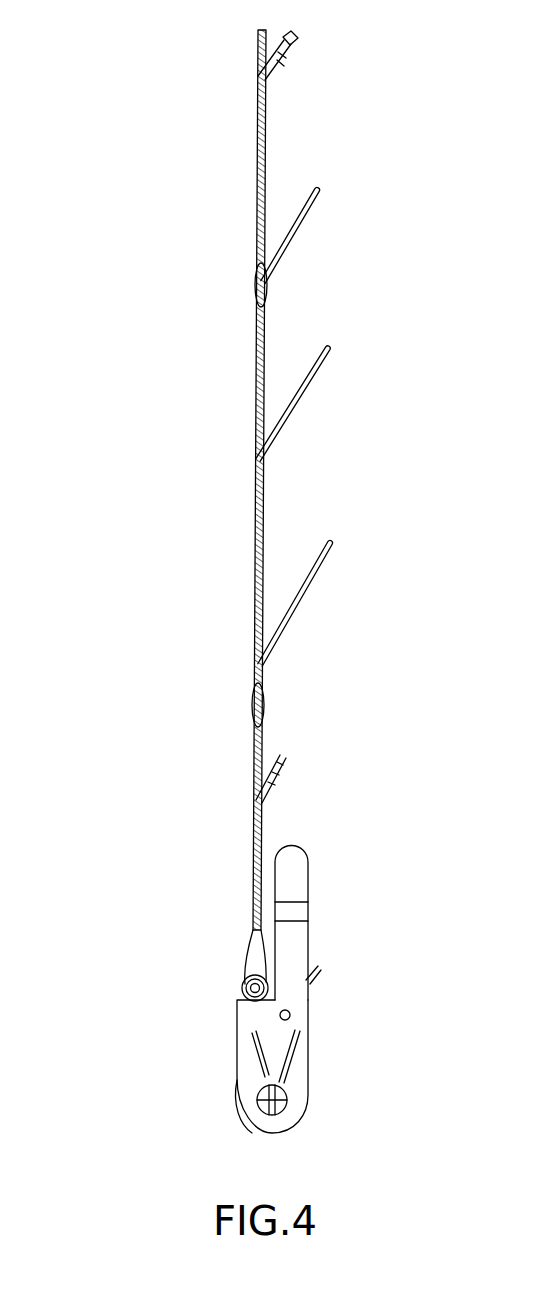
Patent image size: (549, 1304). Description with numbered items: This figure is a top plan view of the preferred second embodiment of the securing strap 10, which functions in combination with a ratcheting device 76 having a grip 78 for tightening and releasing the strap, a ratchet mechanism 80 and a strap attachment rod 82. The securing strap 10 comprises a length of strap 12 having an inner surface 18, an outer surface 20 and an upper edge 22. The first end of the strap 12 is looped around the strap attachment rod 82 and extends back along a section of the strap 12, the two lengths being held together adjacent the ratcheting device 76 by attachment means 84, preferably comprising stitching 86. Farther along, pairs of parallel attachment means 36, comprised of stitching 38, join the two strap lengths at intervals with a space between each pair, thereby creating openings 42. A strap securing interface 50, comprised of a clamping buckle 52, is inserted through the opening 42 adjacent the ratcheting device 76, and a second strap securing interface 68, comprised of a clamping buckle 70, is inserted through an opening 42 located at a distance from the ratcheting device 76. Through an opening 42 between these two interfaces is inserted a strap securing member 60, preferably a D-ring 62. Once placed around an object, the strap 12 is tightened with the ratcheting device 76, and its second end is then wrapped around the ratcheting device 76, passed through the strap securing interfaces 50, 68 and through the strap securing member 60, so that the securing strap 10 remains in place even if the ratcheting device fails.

The securing strap 10 is at (146, 58).
The strap 12 is at (167, 480).
The upper edge 22 is at (257, 572).
The inner surface 18 is at (257, 373).
The outer surface 20 is at (262, 505).
The attachment means 36 is at (282, 489).
The stitching 38 is at (262, 305).
The openings 42 is at (258, 273).
The strap securing member 60 is at (365, 317).
The D-ring 62 is at (318, 195).
The second strap securing interface 68 is at (339, 46).
The clamping buckle 70 is at (293, 35).
The strap securing interface 50 is at (359, 748).
The clamping buckle 52 is at (284, 755).
The grip 78 is at (293, 862).
The attachment means 84 is at (167, 903).
The stitching 86 is at (253, 928).
The strap attachment rod 82 is at (241, 983).
The ratcheting device 76 is at (300, 982).
The ratchet mechanism 80 is at (275, 1100).